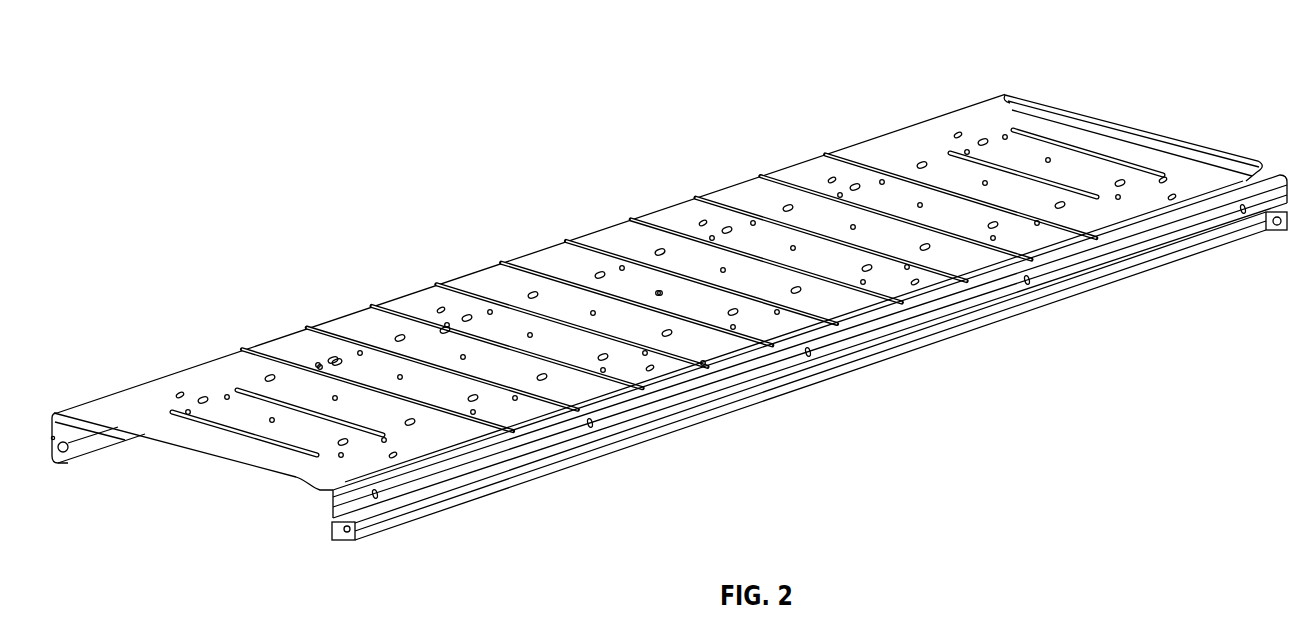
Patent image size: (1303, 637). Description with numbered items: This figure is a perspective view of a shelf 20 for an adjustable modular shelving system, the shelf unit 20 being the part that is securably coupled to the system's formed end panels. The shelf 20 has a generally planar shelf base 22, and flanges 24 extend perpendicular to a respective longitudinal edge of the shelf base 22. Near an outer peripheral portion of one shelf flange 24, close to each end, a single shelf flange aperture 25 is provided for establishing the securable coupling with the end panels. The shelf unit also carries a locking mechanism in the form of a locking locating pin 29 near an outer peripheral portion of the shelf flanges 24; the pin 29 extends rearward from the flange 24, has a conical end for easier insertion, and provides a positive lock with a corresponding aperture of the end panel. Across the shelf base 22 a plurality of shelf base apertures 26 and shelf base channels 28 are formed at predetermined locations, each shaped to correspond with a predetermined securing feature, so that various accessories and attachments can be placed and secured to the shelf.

The shelf 20 is at (660, 345).
The shelf base 22 is at (297, 464).
The shelf flange 24 is at (763, 384).
The shelf flange aperture 25 is at (348, 542).
The shelf base aperture 26 is at (982, 138).
The shelf base channel 28 is at (221, 432).
The locking locating pin 29 is at (63, 453).